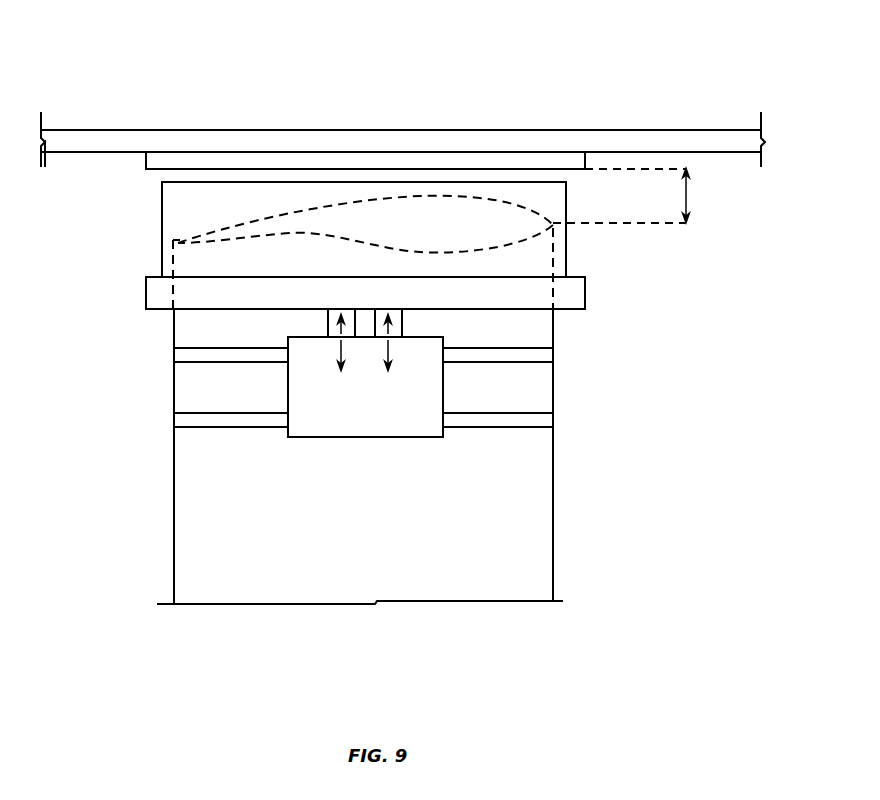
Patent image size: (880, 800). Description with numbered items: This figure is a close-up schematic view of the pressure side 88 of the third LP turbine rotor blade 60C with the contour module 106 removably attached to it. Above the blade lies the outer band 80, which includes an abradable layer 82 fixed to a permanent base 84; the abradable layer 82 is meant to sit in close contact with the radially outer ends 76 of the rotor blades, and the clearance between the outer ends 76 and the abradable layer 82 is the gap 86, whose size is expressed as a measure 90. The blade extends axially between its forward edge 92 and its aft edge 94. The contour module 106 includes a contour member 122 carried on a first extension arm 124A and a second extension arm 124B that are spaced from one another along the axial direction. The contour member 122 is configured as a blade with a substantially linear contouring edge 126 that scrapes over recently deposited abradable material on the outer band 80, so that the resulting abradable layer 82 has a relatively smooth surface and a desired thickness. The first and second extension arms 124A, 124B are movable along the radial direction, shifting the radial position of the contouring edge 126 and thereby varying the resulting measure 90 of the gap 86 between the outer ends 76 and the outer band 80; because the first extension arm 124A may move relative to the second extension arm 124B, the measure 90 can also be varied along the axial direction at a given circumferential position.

The outer band 80 is at (483, 78).
The abradable layer 82 is at (289, 152).
The permanent base 84 is at (678, 130).
The gap 86 is at (202, 201).
The radially outer ends 76 is at (186, 232).
The measure 90 is at (692, 193).
The contour member 122 is at (163, 235).
The contouring edge 126 is at (237, 165).
The contour module 106 is at (594, 337).
The first extension arm 124A is at (330, 322).
The second extension arm 124B is at (402, 322).
The aft edge 94 is at (146, 478).
The pressure side 88 is at (205, 536).
The third LP turbine rotor blade 60C is at (543, 457).
The forward edge 92 is at (570, 547).